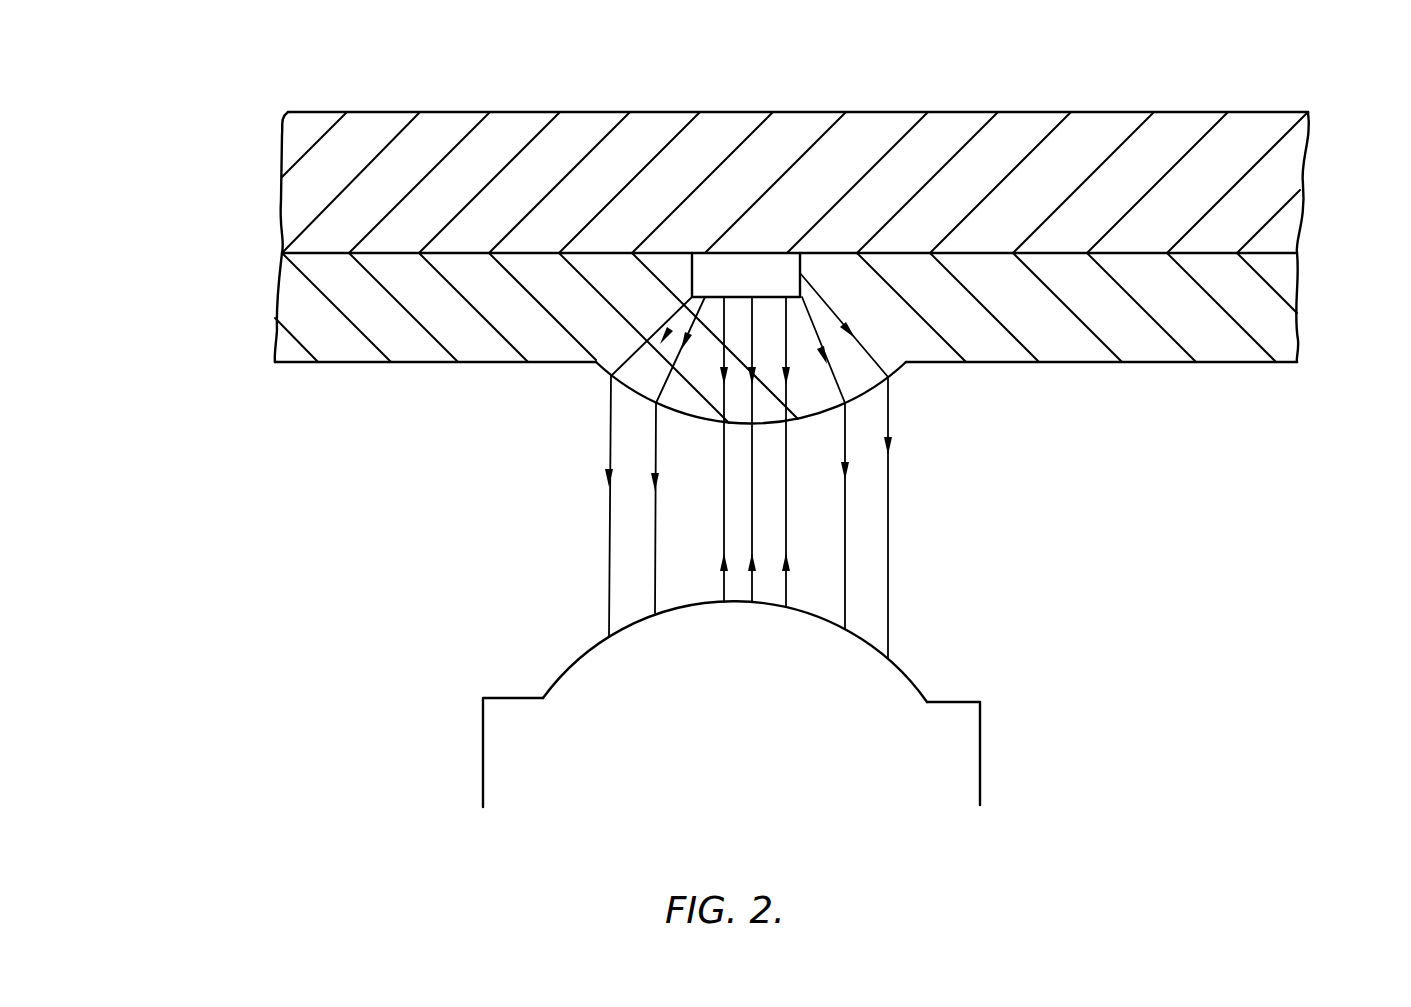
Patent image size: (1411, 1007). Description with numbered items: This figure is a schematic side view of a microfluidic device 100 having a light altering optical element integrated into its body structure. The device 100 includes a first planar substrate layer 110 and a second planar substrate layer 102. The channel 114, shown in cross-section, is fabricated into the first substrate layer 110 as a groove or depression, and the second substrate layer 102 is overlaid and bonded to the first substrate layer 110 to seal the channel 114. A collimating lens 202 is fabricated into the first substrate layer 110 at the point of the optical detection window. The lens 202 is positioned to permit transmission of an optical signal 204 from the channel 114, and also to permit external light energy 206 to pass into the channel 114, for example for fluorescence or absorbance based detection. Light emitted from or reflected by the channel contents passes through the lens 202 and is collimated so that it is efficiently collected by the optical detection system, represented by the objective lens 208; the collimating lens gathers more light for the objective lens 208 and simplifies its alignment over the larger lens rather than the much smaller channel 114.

The device 100 is at (263, 77).
The second planar substrate layer 102 is at (1291, 178).
The first planar substrate layer 110 is at (1291, 299).
The channel 114 is at (775, 270).
The collimating lens 202 is at (913, 363).
The optical signal from the channel 204 is at (607, 516).
The external light energy 206 is at (720, 535).
The objective lens 208 is at (915, 697).